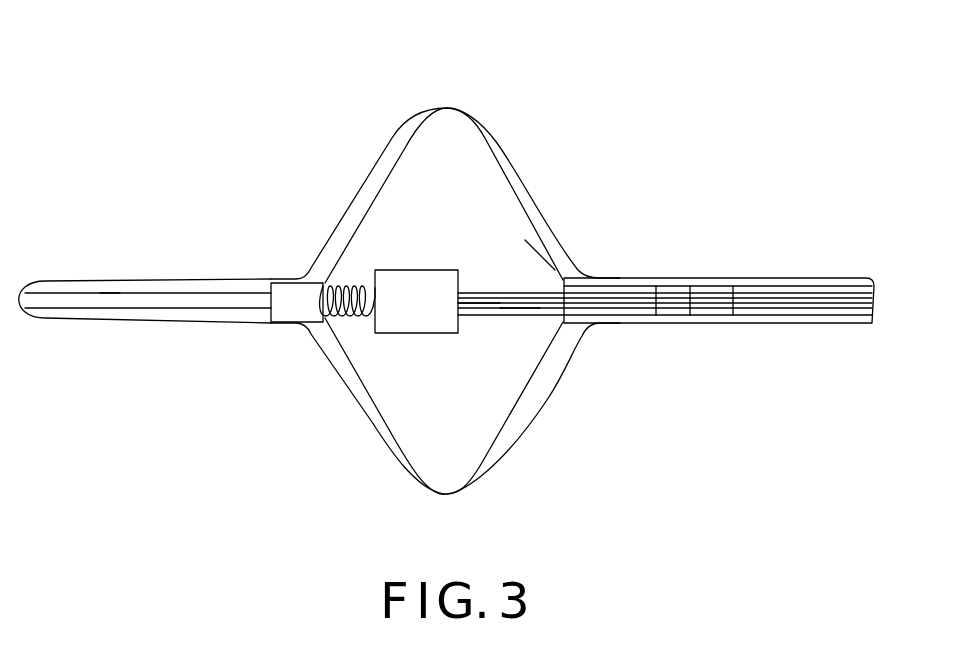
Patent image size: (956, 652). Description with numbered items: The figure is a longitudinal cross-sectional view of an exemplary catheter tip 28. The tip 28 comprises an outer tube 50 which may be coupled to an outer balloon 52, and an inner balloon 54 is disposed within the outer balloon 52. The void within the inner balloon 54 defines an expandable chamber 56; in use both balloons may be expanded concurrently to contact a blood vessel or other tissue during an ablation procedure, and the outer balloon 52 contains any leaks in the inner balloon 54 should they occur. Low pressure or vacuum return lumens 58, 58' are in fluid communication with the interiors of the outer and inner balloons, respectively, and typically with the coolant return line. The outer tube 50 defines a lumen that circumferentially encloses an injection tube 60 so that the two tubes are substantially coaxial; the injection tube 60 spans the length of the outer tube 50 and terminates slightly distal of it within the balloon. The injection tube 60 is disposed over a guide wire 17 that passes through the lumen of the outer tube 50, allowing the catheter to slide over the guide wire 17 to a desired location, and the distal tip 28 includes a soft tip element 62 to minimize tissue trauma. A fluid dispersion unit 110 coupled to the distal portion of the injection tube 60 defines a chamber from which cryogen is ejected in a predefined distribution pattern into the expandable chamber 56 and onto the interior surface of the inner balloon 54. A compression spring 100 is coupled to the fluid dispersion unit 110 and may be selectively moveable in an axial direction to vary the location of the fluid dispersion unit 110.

The guide wire 17 is at (110, 294).
The tip 28 is at (662, 124).
The outer tube 50 is at (788, 277).
The outer balloon 52 is at (494, 124).
The inner balloon 54 is at (513, 190).
The expandable chamber 56 is at (537, 260).
The return lumen 58 is at (715, 271).
The return lumen 58' is at (662, 266).
The injection tube 60 is at (490, 310).
The soft tip element 62 is at (43, 320).
The compression spring 100 is at (372, 282).
The fluid dispersion unit 110 is at (423, 270).